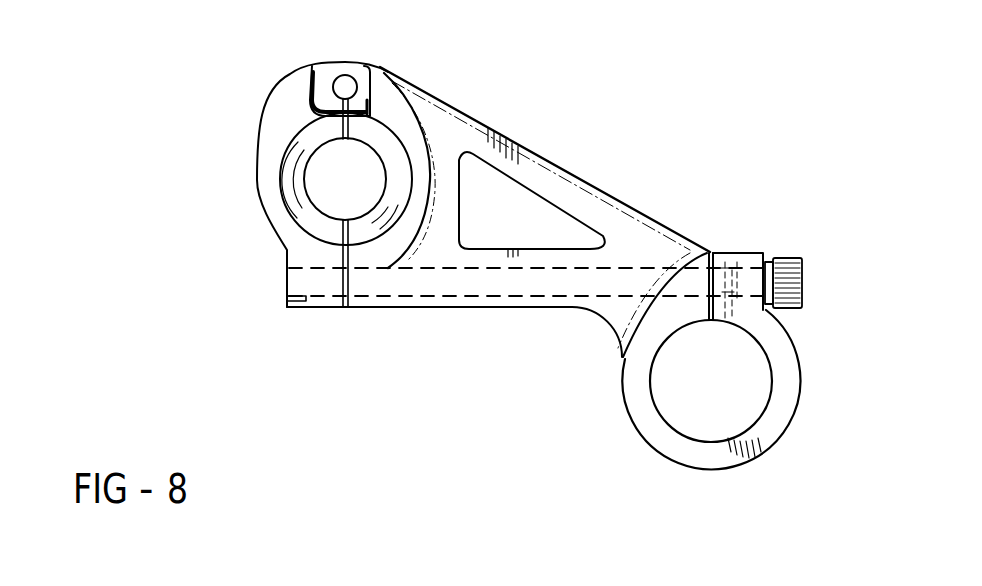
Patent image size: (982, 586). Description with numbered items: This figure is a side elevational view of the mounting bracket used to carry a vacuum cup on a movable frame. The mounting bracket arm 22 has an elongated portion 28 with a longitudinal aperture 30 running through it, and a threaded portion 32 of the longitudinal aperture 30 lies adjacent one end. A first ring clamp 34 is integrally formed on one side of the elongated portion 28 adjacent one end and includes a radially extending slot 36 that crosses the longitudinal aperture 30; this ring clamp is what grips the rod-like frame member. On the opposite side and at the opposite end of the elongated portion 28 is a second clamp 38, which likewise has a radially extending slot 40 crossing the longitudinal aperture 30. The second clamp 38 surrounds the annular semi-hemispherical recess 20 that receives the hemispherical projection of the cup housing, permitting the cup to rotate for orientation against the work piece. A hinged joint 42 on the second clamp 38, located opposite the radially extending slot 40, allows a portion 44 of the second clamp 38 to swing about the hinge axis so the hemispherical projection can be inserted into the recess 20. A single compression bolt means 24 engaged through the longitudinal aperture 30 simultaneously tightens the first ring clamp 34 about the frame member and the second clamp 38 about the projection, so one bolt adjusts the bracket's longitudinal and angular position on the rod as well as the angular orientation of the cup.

The semi-hemispherical recess 20 is at (293, 171).
The mounting bracket arm 22 is at (561, 343).
The single compression bolt means 24 is at (788, 258).
The elongated portion 28 is at (497, 308).
The longitudinal aperture 30 is at (464, 297).
The threaded portion 32 is at (287, 311).
The first ring clamp 34 is at (763, 456).
The radially extending slot 36 is at (708, 252).
The second clamp 38 is at (420, 133).
The radially extending slot 40 is at (350, 308).
The hinged joint 42 is at (338, 66).
The portion of the second clamp 44 is at (268, 116).